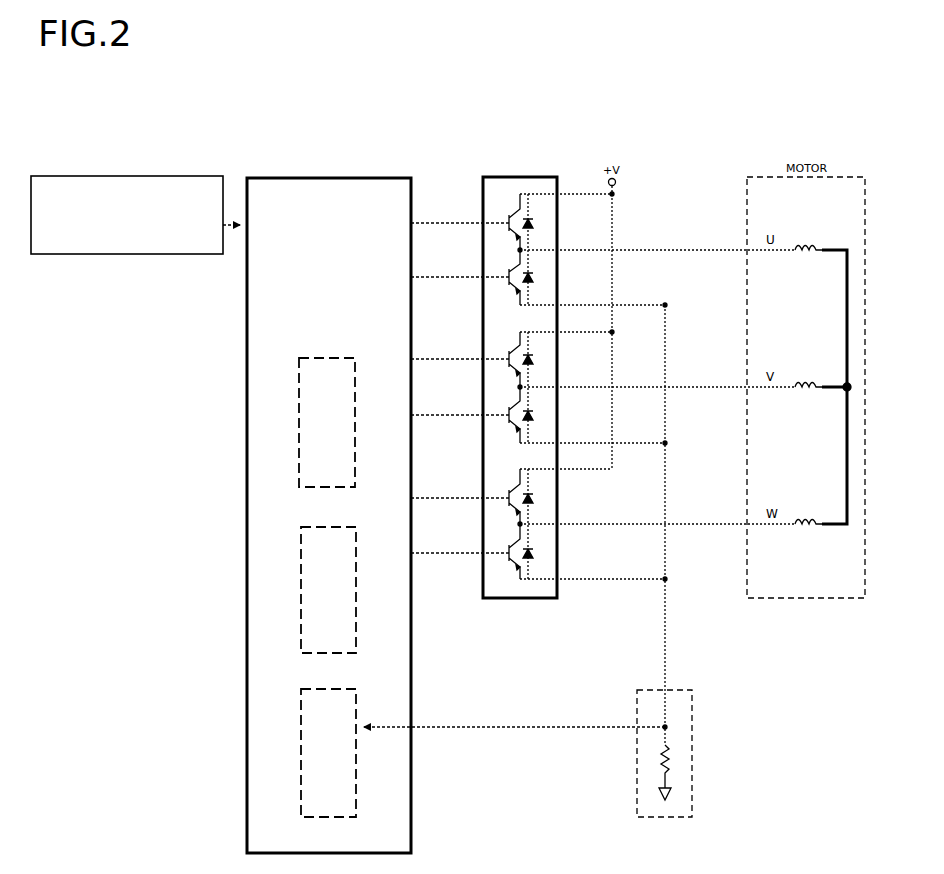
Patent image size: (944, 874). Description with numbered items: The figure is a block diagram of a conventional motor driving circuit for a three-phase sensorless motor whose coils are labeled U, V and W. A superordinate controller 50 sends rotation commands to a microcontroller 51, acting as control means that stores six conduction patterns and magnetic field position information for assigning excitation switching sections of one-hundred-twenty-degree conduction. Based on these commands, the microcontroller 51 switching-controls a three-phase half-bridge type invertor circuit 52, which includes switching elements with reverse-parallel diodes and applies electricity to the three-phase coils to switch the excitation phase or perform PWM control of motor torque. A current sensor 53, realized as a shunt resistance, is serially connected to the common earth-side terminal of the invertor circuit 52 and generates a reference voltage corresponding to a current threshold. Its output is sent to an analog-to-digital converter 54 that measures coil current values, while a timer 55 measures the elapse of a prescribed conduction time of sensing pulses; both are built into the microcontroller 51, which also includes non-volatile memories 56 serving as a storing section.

The superordinate controller 50 is at (128, 176).
The MPU 51 is at (329, 494).
The invertor circuit 52 is at (575, 362).
The current sensor 53 is at (685, 732).
The A/D converter 54 is at (351, 745).
The timer 55 is at (351, 582).
The non-volatile memories 56 is at (349, 419).